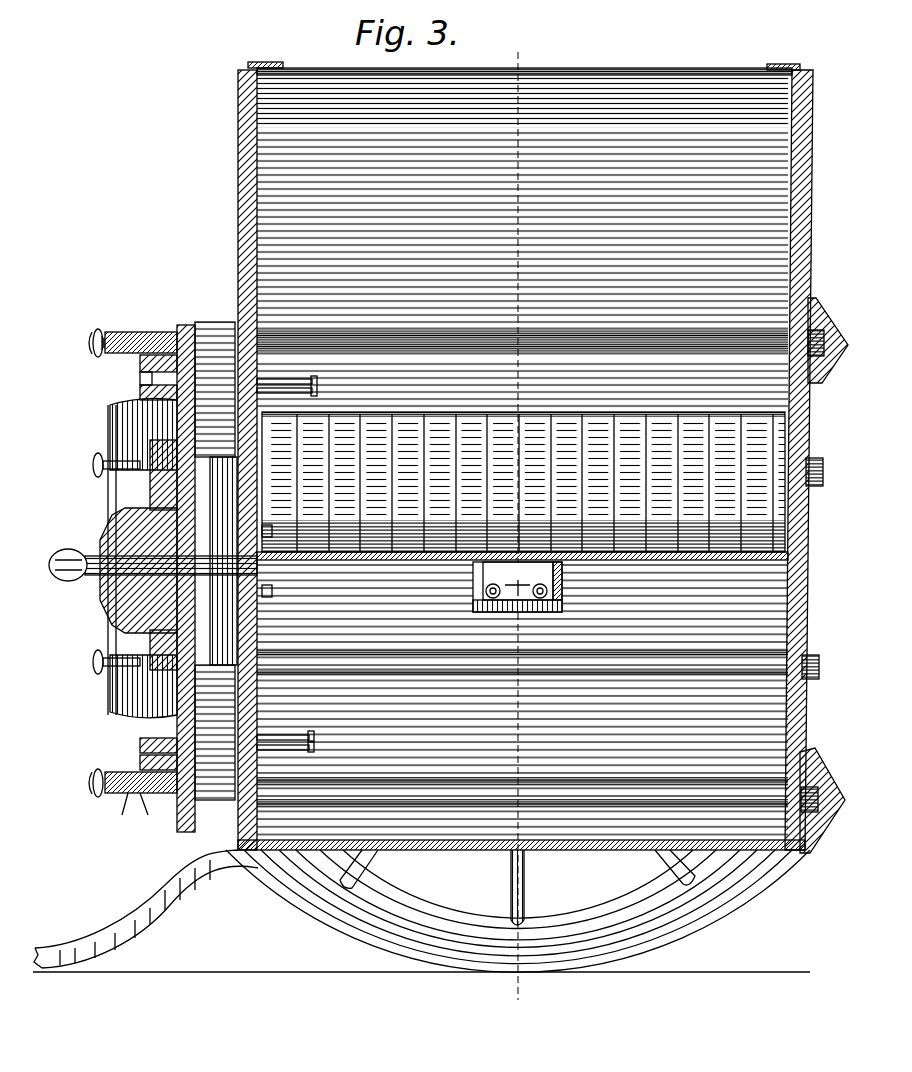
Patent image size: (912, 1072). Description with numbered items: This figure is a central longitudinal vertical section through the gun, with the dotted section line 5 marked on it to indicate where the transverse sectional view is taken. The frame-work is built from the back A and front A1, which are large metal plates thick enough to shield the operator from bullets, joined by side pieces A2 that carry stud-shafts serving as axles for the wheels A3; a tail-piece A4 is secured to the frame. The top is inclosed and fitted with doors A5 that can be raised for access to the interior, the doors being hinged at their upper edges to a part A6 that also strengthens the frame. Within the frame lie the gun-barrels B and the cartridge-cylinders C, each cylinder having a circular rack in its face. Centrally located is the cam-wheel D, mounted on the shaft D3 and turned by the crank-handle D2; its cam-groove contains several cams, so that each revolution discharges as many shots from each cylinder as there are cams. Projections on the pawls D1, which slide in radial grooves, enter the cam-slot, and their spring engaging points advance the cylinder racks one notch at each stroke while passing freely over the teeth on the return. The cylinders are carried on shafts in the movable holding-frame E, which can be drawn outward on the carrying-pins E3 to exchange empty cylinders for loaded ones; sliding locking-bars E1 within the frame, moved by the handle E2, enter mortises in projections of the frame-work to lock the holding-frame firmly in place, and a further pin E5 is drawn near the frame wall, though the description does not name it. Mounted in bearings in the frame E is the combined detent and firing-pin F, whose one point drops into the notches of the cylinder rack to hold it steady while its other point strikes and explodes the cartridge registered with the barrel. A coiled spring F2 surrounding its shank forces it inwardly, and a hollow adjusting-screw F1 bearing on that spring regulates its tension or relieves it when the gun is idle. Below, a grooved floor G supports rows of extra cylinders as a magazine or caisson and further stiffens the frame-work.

The back frame portion A is at (238, 163).
The front frame portion A1 is at (787, 752).
The side pieces A2 is at (522, 457).
The wheels A3 is at (822, 325).
The tail-piece A4 is at (165, 890).
The doors A5 is at (715, 898).
The door-supporting part A6 is at (608, 70).
The gun-barrels B is at (462, 335).
The cartridge-cylinders C is at (214, 320).
The cam-wheel D is at (118, 532).
The pawls D1 is at (92, 735).
The crank-handle D2 is at (80, 562).
The shaft D3 is at (288, 625).
The movable holding-frame E is at (145, 332).
The sliding locking-bars E1 is at (126, 752).
The handle E2 is at (150, 392).
The carrying-pins E3 is at (292, 736).
The bolt E5 is at (318, 384).
The combined detent and firing-pin F is at (92, 343).
The hollow adjusting-screw F1 is at (102, 358).
The coiled spring F2 is at (136, 816).
The floor or cylinder-support G is at (368, 560).
The section line 5 is at (517, 527).